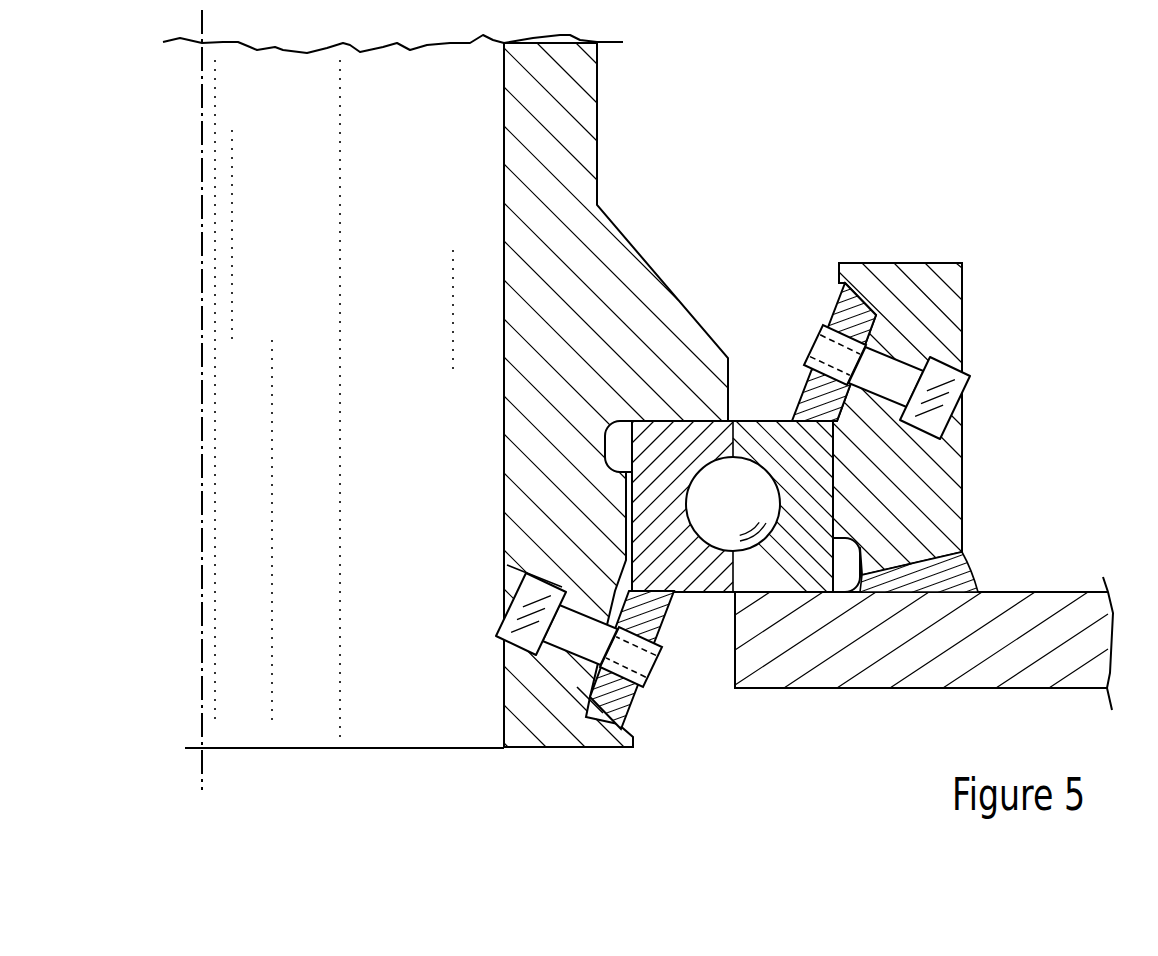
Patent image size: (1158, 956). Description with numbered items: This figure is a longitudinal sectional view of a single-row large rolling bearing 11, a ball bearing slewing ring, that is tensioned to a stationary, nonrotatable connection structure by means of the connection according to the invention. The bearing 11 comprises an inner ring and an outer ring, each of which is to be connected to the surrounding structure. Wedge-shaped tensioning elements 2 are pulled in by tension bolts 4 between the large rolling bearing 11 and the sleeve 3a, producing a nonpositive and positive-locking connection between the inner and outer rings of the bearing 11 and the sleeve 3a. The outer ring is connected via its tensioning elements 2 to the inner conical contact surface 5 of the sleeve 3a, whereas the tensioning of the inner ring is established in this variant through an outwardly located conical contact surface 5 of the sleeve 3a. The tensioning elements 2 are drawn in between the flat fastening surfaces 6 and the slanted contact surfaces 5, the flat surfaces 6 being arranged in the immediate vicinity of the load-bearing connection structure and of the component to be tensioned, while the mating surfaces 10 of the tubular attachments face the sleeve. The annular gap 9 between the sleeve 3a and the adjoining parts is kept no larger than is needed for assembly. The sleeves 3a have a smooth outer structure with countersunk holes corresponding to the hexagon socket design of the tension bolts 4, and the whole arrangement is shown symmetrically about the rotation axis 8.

The tensioning elements 2 is at (870, 326).
The sleeve 3a is at (590, 540).
The tension bolts 4 is at (962, 384).
The conical contact surface 5 is at (860, 300).
The fastening surfaces 6 is at (800, 413).
The axis of rotation 8 is at (204, 322).
The annular gap 9 is at (612, 468).
The mating surfaces 10 is at (622, 338).
The large rolling bearing 11 is at (657, 453).